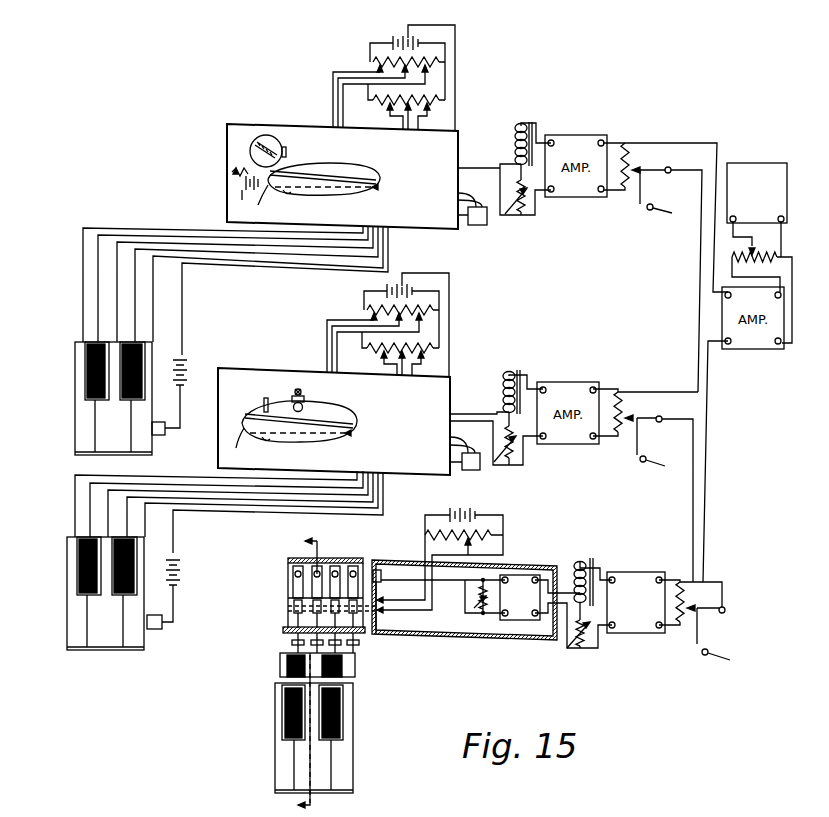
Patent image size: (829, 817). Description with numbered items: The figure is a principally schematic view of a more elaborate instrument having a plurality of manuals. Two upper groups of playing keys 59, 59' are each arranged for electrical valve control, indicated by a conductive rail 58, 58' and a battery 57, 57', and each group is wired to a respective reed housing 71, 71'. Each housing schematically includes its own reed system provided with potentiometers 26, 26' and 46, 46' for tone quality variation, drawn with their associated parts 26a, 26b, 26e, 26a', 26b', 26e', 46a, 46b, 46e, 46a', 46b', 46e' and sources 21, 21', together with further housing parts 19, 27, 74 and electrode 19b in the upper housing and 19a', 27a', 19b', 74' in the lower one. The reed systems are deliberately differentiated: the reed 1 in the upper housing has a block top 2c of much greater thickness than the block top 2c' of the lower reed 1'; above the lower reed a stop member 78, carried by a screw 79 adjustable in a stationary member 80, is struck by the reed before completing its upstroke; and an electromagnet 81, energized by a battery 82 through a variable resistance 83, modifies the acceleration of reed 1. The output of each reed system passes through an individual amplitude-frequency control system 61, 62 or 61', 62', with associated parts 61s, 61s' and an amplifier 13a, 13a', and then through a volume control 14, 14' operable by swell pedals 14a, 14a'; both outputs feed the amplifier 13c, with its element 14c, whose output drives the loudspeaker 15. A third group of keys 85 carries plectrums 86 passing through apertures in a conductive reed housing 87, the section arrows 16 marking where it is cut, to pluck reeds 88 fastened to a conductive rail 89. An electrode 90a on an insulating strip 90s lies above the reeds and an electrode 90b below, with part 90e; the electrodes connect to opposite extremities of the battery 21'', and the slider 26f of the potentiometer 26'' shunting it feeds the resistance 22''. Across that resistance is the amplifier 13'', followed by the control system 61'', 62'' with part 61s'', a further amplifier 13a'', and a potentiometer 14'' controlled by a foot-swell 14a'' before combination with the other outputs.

The reed 1 is at (324, 169).
The reed 1' is at (299, 392).
The block top 2c is at (259, 202).
The block top 2c' is at (237, 446).
The amplifier 13a is at (576, 184).
The amplifier 13a' is at (568, 427).
The further amplifier 13a'' is at (636, 624).
The amplifier 13c is at (746, 351).
The amplifier 13'' is at (520, 621).
The volume control 14 is at (665, 204).
The volume control 14' is at (645, 399).
The potentiometer 14'' is at (701, 607).
The swell pedal 14a is at (671, 279).
The swell pedal 14a' is at (665, 499).
The foot-swell 14a'' is at (711, 651).
The resistor 14c is at (756, 250).
The loudspeaker 15 is at (755, 163).
The conductor 16 is at (297, 675).
The pivot 19 is at (285, 170).
The leaf 19a' is at (264, 377).
The electrode 19b is at (326, 202).
The key stop 19b' is at (300, 452).
The battery 21 is at (442, 31).
The battery 21' is at (447, 279).
The battery 21'' is at (488, 508).
The resistance 22'' is at (480, 624).
The potentiometer 26 is at (431, 50).
The potentiometer 26' is at (433, 298).
The potentiometer 26'' is at (492, 528).
The potentiometer tap 26a is at (341, 82).
The potentiometer tap 26a' is at (343, 330).
The potentiometer tap 26b is at (431, 96).
The potentiometer tap 26b' is at (425, 343).
The potentiometer tap 26e is at (428, 89).
The potentiometer tap 26e' is at (421, 339).
The slider 26f is at (471, 541).
The spring 27 is at (300, 170).
The spring 27a' is at (287, 405).
The potentiometer 46 is at (438, 96).
The potentiometer 46' is at (434, 351).
The potentiometer tap 46a is at (374, 115).
The potentiometer tap 46a' is at (367, 363).
The potentiometer tap 46b is at (464, 117).
The potentiometer tap 46b' is at (457, 368).
The potentiometer tap 46e is at (470, 110).
The potentiometer tap 46e' is at (470, 358).
The battery 57 is at (191, 388).
The battery 57' is at (191, 587).
The conductive rail 58 is at (170, 420).
The conductive rail 58' is at (167, 618).
The group of playing keys 59 is at (85, 398).
The group of playing keys 59' is at (80, 593).
The amplitude-frequency control system 61 is at (552, 130).
The amplitude-frequency control system 61' is at (543, 379).
The amplitude-frequency control system 61'' is at (616, 562).
The transformer winding 61s is at (494, 144).
The transformer winding 61s' is at (489, 392).
The transformer winding 61s'' is at (583, 561).
The amplitude-frequency control system 62 is at (524, 207).
The amplitude-frequency control system 62' is at (522, 452).
The amplitude-frequency control system 62'' is at (590, 639).
The reed housing 71 is at (342, 159).
The reed housing 71' is at (334, 405).
The contact box 74 is at (474, 226).
The contact box 74' is at (477, 467).
The stop member 78 is at (303, 409).
The screw 79 is at (301, 392).
The stationary member 80 is at (304, 402).
The electromagnet 81 is at (252, 140).
The battery 82 is at (245, 185).
The variable resistance 83 is at (238, 168).
The keys 85 is at (278, 740).
The plectrums 86 is at (282, 661).
The conductive reed housing 87 is at (418, 634).
The reeds 88 is at (293, 582).
The conductive rail 89 is at (377, 570).
The electrode 90a is at (297, 600).
The electrode 90b is at (290, 608).
The contact 90e is at (376, 634).
The insulating strip 90s is at (340, 566).